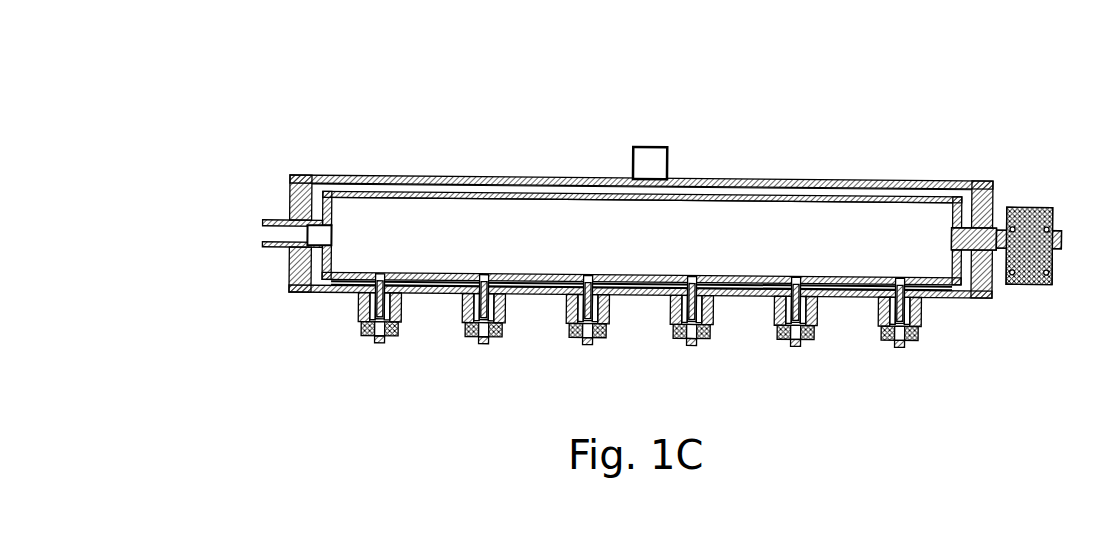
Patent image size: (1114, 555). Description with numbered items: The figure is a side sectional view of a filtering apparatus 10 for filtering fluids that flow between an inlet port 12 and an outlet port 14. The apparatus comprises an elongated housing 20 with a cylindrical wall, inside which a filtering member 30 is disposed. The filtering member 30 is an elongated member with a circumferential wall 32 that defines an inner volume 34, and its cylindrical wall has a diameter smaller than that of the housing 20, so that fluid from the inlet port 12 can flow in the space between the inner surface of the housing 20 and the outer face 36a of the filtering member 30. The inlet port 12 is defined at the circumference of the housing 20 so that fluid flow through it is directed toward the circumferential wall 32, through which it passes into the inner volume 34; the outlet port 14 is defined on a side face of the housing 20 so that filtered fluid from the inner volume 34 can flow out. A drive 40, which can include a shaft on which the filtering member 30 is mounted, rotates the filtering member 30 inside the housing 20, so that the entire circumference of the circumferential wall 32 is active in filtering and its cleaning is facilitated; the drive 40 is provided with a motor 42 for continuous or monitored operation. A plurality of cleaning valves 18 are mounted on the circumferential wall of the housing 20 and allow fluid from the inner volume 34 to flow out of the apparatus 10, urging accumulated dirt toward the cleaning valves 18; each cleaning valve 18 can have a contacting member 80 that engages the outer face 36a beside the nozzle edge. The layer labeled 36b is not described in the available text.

The filtering apparatus 10 is at (284, 158).
The inlet port 12 is at (648, 165).
The outlet port 14 is at (280, 231).
The cleaning valve 18 is at (362, 330).
The housing 20 is at (527, 178).
The filtering member 30 is at (930, 182).
The circumferential wall 32 is at (685, 190).
The inner volume 34 is at (437, 225).
The outer face 36a is at (768, 201).
The inner layer 36b is at (735, 198).
The drive 40 is at (1000, 228).
The motor 42 is at (1050, 268).
The contacting member 80 is at (553, 294).